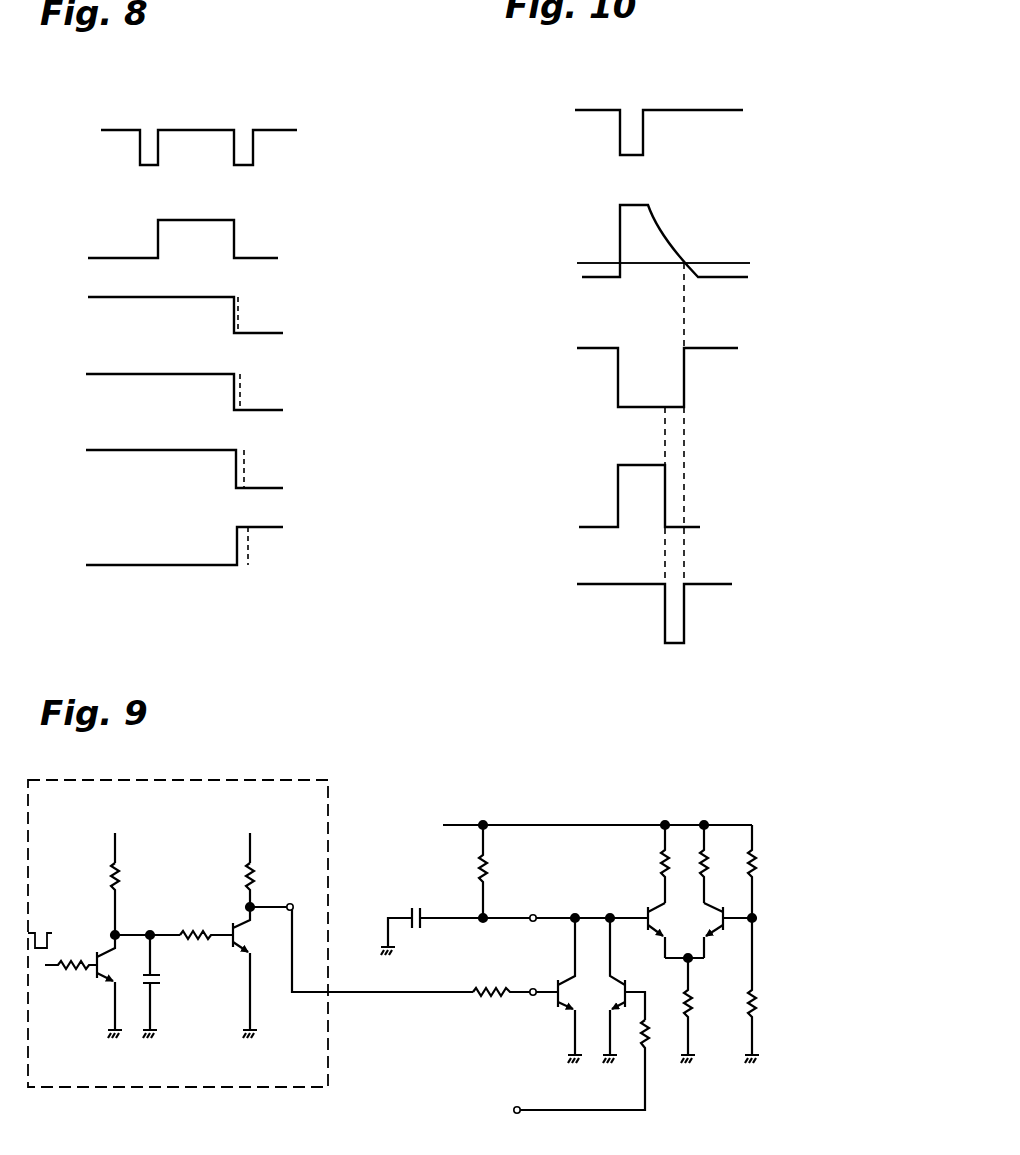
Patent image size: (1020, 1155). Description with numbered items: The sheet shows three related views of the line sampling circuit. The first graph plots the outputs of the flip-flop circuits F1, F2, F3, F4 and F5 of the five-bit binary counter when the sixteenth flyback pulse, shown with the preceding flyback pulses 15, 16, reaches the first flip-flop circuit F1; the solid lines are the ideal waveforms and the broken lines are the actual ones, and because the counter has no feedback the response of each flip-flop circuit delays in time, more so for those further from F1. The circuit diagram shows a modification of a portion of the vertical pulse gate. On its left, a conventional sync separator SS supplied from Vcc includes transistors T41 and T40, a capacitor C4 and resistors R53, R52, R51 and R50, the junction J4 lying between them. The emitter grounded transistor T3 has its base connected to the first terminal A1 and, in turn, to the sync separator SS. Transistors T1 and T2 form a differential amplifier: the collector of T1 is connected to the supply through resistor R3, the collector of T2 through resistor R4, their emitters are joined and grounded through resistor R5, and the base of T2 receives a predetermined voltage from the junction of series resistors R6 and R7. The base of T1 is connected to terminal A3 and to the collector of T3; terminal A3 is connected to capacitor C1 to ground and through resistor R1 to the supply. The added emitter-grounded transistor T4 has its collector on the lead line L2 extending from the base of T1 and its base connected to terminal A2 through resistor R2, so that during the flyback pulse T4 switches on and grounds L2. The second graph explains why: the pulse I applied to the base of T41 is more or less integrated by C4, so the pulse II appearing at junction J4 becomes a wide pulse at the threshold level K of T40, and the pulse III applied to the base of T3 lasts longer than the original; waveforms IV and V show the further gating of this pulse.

In FIG. 8, the first pulse 15 is at (148, 162).
In FIG. 8, the second pulse 16 is at (246, 162).
In FIG. 8, the first flip-flop circuit F1 is at (159, 239).
In FIG. 8, the flip-flop circuit F2 is at (161, 309).
In FIG. 8, the flip-flop circuit F3 is at (161, 386).
In FIG. 8, the flip-flop circuit F4 is at (161, 463).
In FIG. 8, the flip-flop circuit F5 is at (162, 555).
In FIG. 10, the waveform (i) I is at (622, 132).
In FIG. 10, the waveform (ii) II is at (626, 241).
In FIG. 10, the waveform (iii) III is at (619, 377).
In FIG. 10, the waveform IV is at (600, 496).
In FIG. 10, the waveform V is at (617, 613).
In FIG. 10, the threshold level K is at (720, 263).
In FIG. 9, the sync separator SS is at (280, 780).
In FIG. 9, the supply voltage Vcc is at (417, 833).
In FIG. 9, the resistor R52 is at (120, 878).
In FIG. 9, the resistor R50 is at (255, 878).
In FIG. 9, the resistor R53 is at (75, 957).
In FIG. 9, the resistor R51 is at (192, 928).
In FIG. 9, the junction J4 is at (148, 932).
In FIG. 9, the transistor T41 is at (92, 982).
In FIG. 9, the transistor T40 is at (232, 943).
In FIG. 9, the capacitor C4 is at (162, 982).
In FIG. 9, the resistor R1 is at (488, 868).
In FIG. 9, the capacitor C1 is at (422, 928).
In FIG. 9, the terminal A3 is at (532, 915).
In FIG. 9, the lead line L2 is at (555, 918).
In FIG. 9, the first terminal A1 is at (532, 988).
In FIG. 9, the terminal A2 is at (515, 1108).
In FIG. 9, the emitter grounded transistor T3 is at (568, 993).
In FIG. 9, the emitter-grounded transistor T4 is at (612, 993).
In FIG. 9, the transistor T1 is at (650, 933).
In FIG. 9, the transistor T2 is at (715, 933).
In FIG. 9, the resistor R2 is at (650, 1033).
In FIG. 9, the resistor R3 is at (663, 865).
In FIG. 9, the resistor R4 is at (707, 863).
In FIG. 9, the resistor R5 is at (687, 1012).
In FIG. 9, the resistor R6 is at (750, 1010).
In FIG. 9, the resistor R7 is at (755, 863).